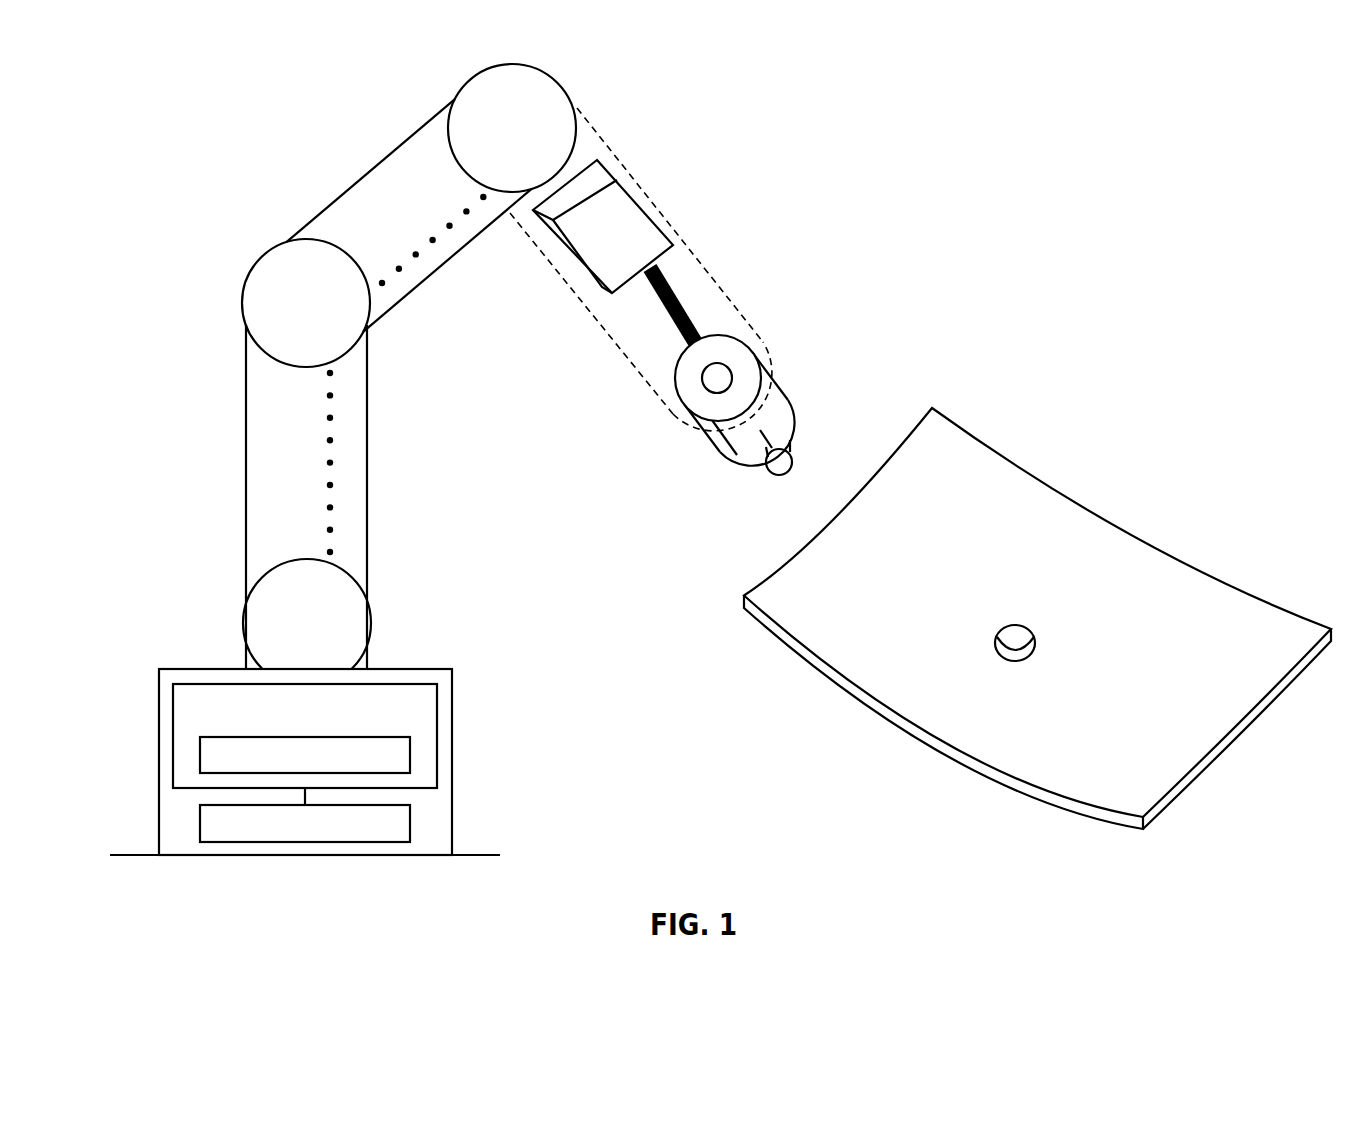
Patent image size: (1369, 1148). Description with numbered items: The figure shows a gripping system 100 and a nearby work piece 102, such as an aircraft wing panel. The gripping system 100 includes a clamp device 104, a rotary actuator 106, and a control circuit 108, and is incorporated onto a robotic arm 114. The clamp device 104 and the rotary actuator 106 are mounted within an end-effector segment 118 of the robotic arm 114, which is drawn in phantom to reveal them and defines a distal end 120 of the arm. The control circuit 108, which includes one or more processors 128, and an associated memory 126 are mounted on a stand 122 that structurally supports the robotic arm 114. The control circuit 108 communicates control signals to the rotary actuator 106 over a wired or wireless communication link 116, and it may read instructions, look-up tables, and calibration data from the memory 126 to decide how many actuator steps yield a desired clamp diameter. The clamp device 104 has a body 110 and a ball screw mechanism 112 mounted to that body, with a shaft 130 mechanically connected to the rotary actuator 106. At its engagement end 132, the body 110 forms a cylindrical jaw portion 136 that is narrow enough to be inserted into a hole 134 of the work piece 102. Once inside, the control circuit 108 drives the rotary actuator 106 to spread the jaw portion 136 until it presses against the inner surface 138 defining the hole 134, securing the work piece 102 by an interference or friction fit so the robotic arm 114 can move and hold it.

The gripping system 100 is at (540, 614).
The work piece 102 is at (985, 471).
The clamp device 104 is at (708, 298).
The rotary actuator 106 is at (617, 203).
The control circuit 108 is at (437, 705).
The body 110 is at (747, 371).
The ball screw mechanism 112 is at (726, 356).
The robotic arm 114 is at (347, 190).
The communication link 116 is at (334, 484).
The end-effector segment 118 is at (608, 338).
The distal end 120 is at (686, 467).
The stand 122 is at (159, 733).
The memory 126 is at (410, 818).
The processors 128 is at (410, 752).
The shaft 130 is at (662, 280).
The engagement end 132 is at (756, 494).
The hole 134 is at (1016, 658).
The jaw portion 136 is at (797, 460).
The inner surface 138 is at (1024, 627).